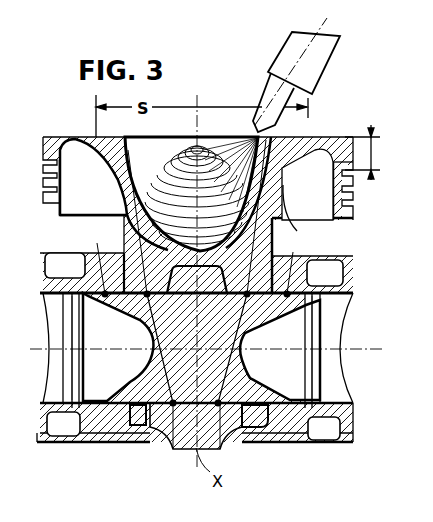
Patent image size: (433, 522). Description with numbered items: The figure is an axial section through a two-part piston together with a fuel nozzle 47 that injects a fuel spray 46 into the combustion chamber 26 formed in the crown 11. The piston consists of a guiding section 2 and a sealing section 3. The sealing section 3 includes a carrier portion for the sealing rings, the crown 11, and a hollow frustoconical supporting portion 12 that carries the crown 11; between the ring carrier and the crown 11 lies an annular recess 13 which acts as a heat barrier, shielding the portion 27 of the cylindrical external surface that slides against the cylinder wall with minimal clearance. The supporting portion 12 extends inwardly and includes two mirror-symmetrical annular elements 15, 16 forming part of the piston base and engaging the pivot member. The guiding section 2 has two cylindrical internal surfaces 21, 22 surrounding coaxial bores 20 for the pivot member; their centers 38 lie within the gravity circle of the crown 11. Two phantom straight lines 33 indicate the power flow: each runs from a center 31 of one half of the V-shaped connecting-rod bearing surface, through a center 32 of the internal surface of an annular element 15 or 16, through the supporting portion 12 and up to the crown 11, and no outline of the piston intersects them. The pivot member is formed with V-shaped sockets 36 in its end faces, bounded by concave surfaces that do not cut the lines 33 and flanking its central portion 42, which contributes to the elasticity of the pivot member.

The nozzle 47 is at (322, 58).
The fuel spray 46 is at (238, 137).
The crown 11 is at (325, 137).
The portion of the cylindrical external surface 27 is at (375, 152).
The combustion chamber 26 is at (110, 186).
The annular recess 13 is at (324, 158).
The center of the internal surface 38 is at (93, 253).
The straight line 33 is at (105, 293).
The supporting portion 12 is at (299, 218).
The sealing section 3 is at (353, 217).
The guiding section 2 is at (355, 291).
The socket 36 is at (112, 340).
The central portion of the pivot member 42 is at (221, 338).
The center of the surface 32 is at (128, 346).
The cylindrical internal surface 21 is at (108, 393).
The bore 20 is at (347, 390).
The annular element 15 is at (127, 424).
The center of the half of the surface 31 is at (176, 449).
The annular element 16 is at (258, 429).
The cylindrical internal surface 22 is at (298, 441).